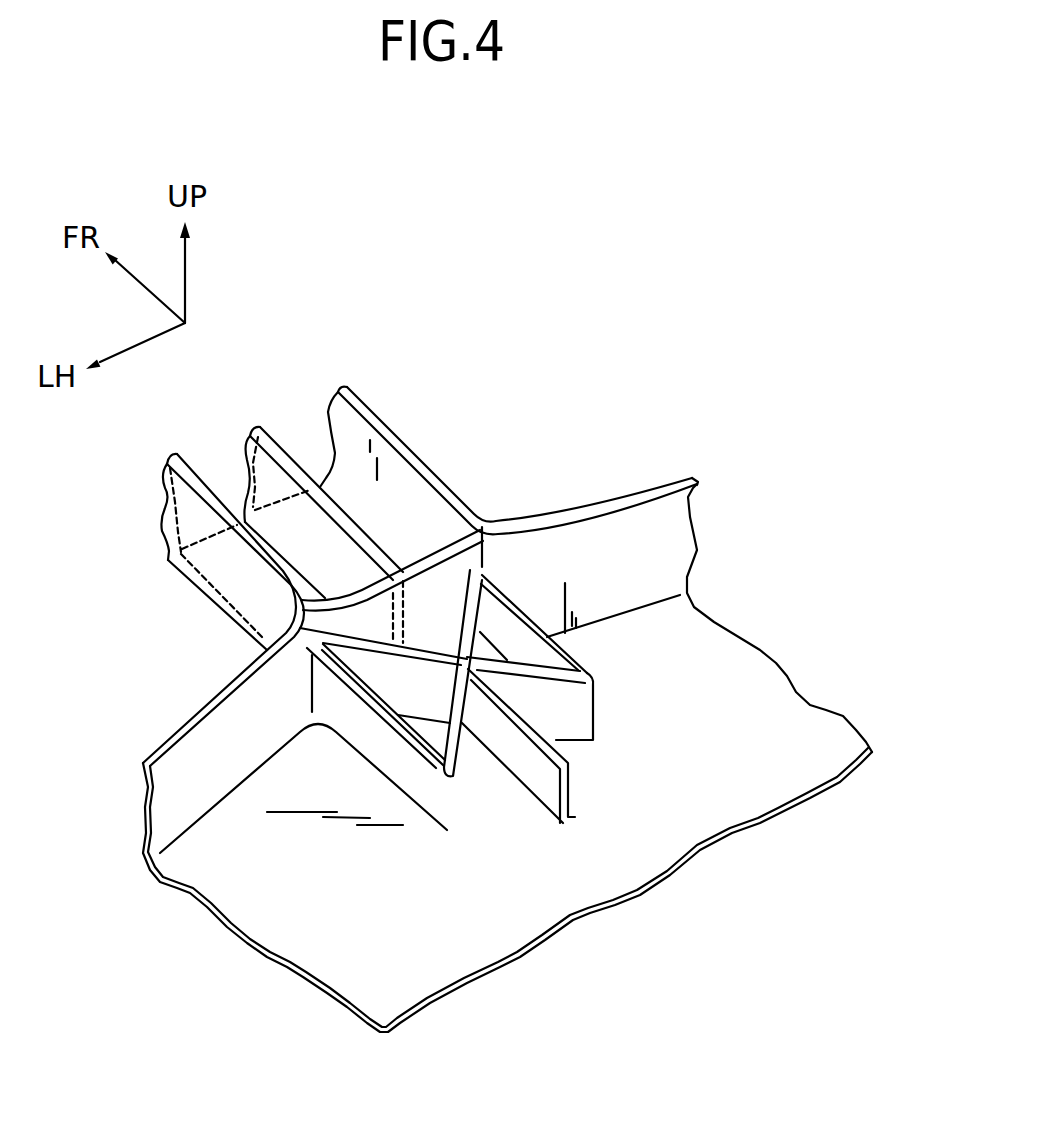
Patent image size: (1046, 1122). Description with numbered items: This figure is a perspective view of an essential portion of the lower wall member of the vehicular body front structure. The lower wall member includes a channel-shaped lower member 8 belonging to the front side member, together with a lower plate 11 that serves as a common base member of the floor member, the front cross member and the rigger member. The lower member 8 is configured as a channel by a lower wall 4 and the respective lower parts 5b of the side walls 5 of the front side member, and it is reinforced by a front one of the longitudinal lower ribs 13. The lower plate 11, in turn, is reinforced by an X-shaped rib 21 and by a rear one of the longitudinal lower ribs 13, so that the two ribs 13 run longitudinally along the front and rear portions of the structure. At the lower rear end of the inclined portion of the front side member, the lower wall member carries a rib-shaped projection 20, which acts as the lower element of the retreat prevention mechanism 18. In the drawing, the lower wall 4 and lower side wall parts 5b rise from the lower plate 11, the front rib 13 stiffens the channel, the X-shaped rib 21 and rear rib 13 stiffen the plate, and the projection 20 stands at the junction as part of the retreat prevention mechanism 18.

The lower wall 4 is at (225, 570).
The side walls 5 is at (509, 442).
The lower parts of the side walls 5b is at (400, 440).
The lower member 8 is at (342, 611).
The lower plate 11 is at (715, 808).
The longitudinal lower ribs 13 is at (262, 425).
The retreat prevention mechanism 18 is at (446, 593).
The rib-shaped projection 20 is at (447, 602).
The X-shaped rib 21 is at (500, 613).